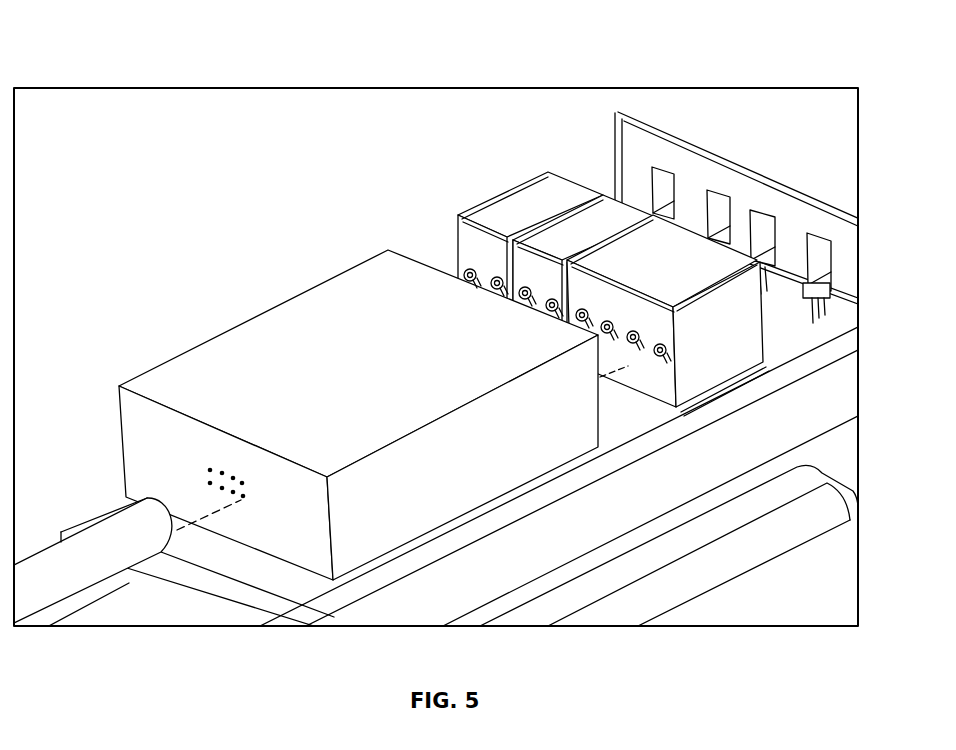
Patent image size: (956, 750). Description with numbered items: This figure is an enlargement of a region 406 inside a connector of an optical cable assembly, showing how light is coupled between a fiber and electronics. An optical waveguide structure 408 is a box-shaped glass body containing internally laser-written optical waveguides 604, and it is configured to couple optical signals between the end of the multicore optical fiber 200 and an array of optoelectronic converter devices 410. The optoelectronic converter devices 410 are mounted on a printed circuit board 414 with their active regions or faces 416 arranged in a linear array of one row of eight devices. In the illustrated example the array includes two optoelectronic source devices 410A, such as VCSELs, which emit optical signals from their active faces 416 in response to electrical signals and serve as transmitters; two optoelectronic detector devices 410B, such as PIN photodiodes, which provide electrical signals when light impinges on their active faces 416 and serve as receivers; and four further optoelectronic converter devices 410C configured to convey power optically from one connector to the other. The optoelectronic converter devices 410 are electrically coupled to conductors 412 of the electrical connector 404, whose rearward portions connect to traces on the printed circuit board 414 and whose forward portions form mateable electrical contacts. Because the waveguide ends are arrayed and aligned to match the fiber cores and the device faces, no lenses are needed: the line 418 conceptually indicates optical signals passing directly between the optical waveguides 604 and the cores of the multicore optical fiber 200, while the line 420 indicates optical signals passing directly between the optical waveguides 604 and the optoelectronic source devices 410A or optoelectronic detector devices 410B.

The multicore optical fiber 200 is at (124, 568).
The electrical connector 404 is at (633, 70).
The region 406 is at (258, 88).
The optical waveguide structure 408 is at (238, 322).
The optoelectronic converter devices 410 is at (652, 232).
The optoelectronic source devices 410A is at (517, 187).
The optoelectronic detector devices 410B is at (570, 207).
The optoelectronic converter devices for power 410C is at (763, 343).
The conductors 412 is at (829, 280).
The printed circuit board 414 is at (807, 375).
The active region or face 416 is at (528, 287).
The line 418 is at (187, 520).
The line 420 is at (622, 368).
The optical waveguides 604 is at (241, 500).